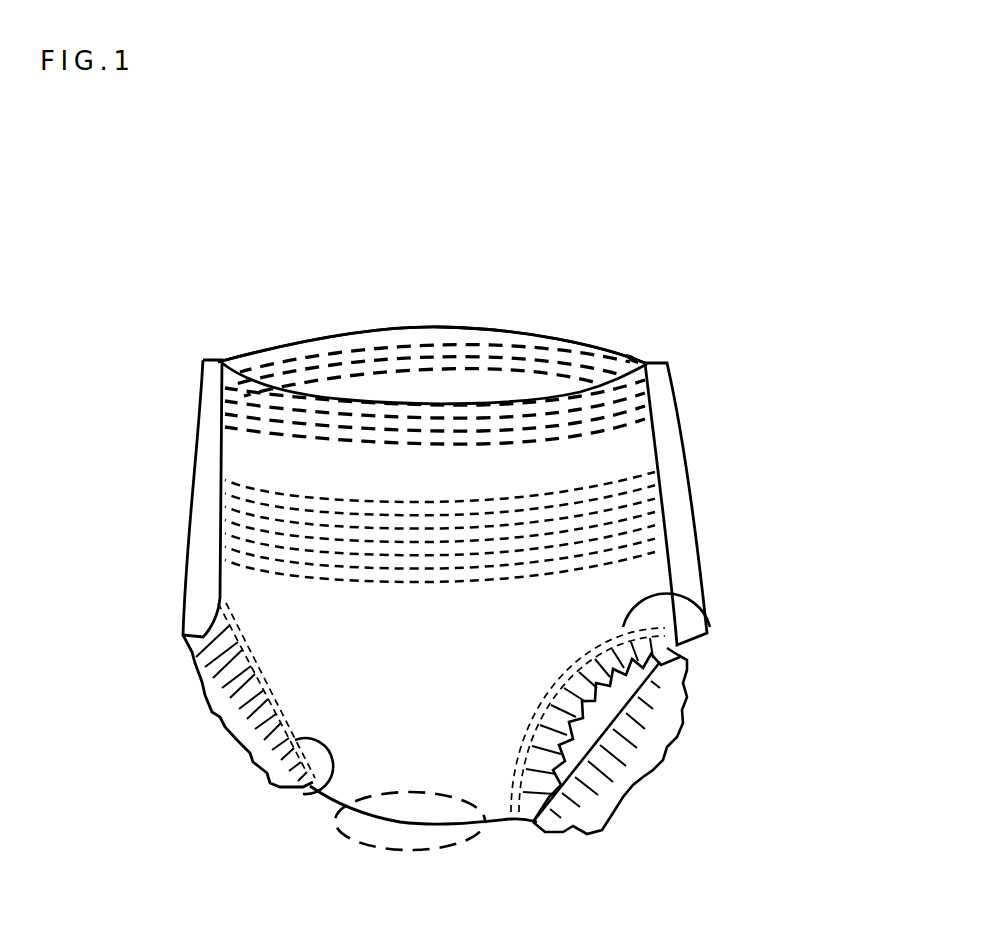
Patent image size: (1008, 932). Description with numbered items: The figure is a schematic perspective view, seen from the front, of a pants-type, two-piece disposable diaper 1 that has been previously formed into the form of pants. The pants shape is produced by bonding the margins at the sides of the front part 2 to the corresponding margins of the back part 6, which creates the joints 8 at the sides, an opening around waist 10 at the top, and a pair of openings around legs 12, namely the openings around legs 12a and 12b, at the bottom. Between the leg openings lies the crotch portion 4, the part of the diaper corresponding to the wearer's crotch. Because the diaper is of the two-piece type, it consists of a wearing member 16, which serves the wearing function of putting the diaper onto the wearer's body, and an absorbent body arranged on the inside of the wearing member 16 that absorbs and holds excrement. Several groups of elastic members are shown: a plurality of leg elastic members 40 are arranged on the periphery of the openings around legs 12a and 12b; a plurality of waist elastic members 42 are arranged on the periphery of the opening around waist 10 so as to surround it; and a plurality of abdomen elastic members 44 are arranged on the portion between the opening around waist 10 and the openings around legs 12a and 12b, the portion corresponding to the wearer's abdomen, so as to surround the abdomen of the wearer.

The disposable diaper 1 is at (894, 273).
The front part 2 is at (608, 446).
The crotch portion 4 is at (398, 835).
The back part 6 is at (539, 334).
The joints 8 is at (215, 417).
The opening around waist 10 is at (411, 398).
The openings around legs 12 is at (476, 718).
The opening around leg 12a is at (205, 699).
The opening around leg 12b is at (596, 721).
The wearing member 16 is at (270, 460).
The leg elastic members 40 is at (303, 794).
The waist elastic members 42 is at (613, 393).
The abdomen elastic members 44 is at (303, 575).